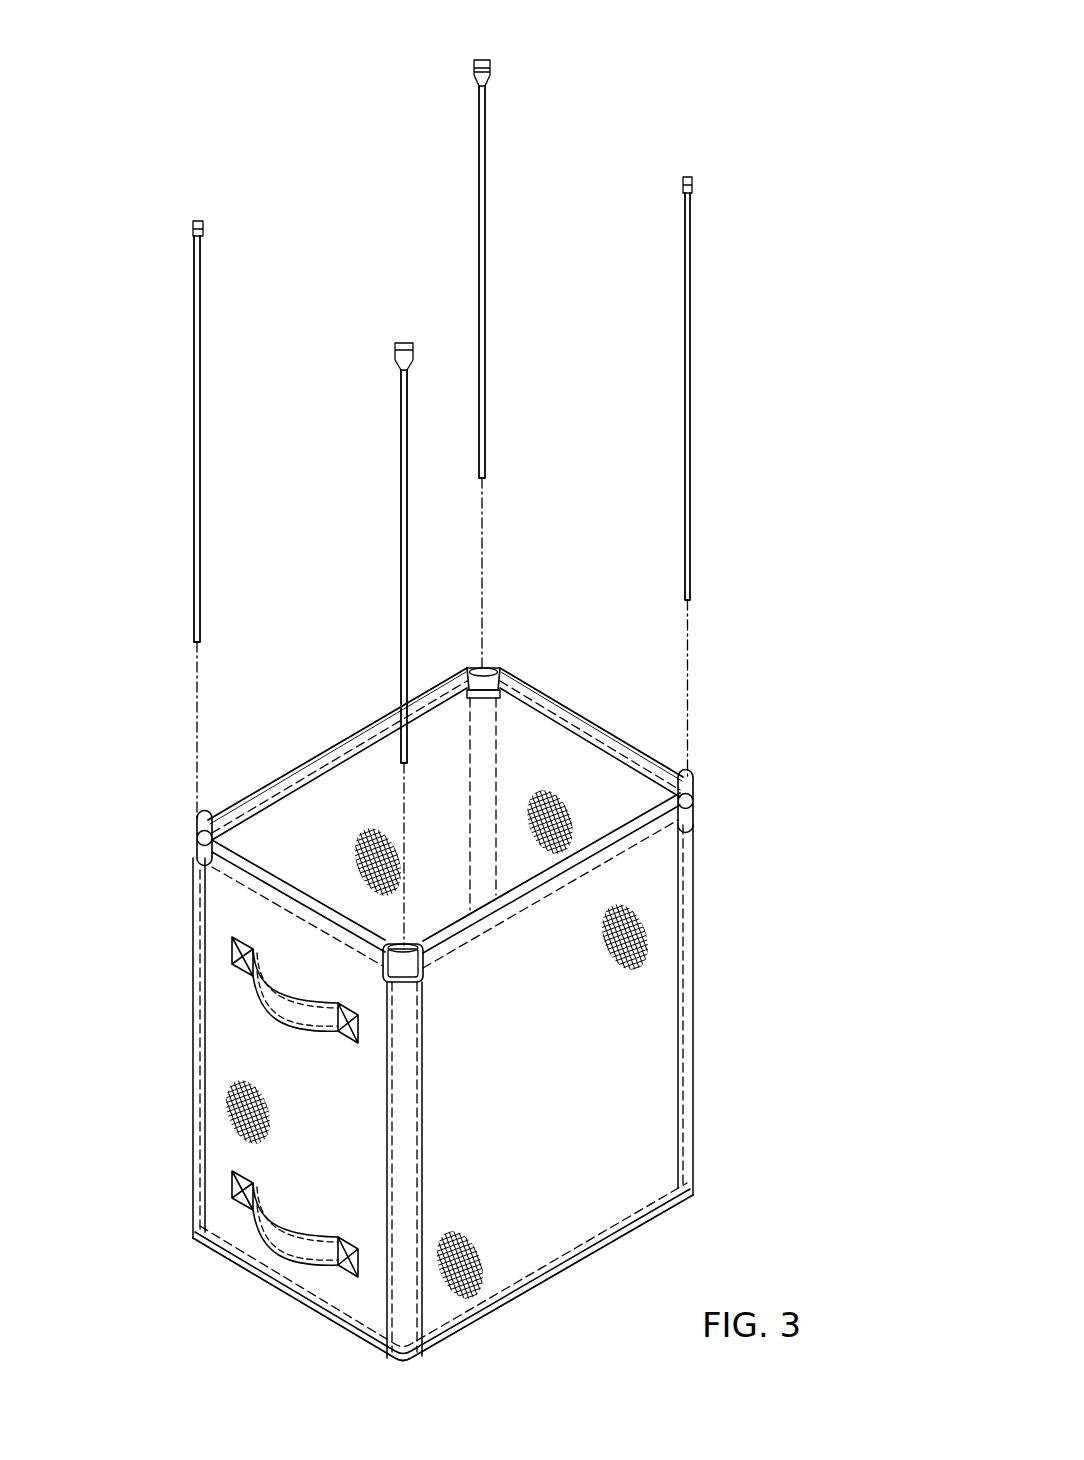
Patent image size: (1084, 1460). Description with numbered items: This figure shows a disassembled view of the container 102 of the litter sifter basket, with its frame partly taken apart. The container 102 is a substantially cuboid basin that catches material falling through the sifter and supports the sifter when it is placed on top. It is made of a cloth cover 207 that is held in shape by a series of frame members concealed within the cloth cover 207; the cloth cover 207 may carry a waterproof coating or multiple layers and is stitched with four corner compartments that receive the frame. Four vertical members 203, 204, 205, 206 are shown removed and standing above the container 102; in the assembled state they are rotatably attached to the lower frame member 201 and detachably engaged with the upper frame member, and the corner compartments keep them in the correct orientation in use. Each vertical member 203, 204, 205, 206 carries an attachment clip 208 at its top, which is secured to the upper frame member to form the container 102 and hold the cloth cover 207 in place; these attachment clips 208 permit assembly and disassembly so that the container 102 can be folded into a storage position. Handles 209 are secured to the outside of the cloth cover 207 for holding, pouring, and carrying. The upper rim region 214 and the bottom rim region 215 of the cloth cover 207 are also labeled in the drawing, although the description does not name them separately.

The container 102 is at (773, 388).
The lower frame member 201 is at (493, 668).
The vertical member 203 is at (479, 157).
The vertical member 204 is at (685, 279).
The vertical member 205 is at (194, 342).
The vertical member 206 is at (400, 472).
The cloth cover 207 is at (650, 1022).
The attachment clip 208 is at (195, 222).
The handle 209 is at (288, 1018).
The top rim 214 is at (332, 758).
The bottom rim 215 is at (597, 1258).